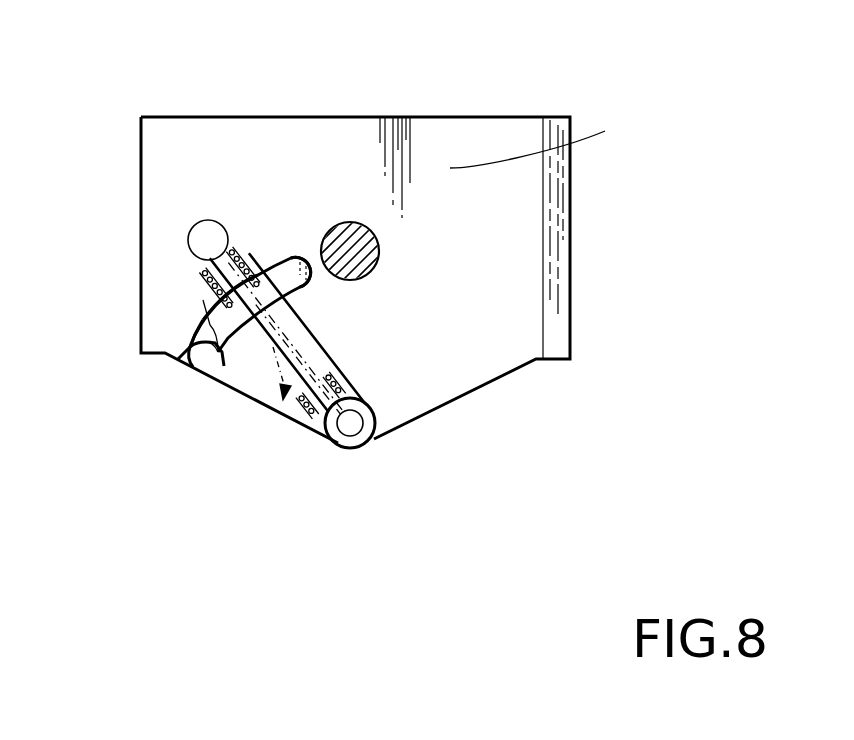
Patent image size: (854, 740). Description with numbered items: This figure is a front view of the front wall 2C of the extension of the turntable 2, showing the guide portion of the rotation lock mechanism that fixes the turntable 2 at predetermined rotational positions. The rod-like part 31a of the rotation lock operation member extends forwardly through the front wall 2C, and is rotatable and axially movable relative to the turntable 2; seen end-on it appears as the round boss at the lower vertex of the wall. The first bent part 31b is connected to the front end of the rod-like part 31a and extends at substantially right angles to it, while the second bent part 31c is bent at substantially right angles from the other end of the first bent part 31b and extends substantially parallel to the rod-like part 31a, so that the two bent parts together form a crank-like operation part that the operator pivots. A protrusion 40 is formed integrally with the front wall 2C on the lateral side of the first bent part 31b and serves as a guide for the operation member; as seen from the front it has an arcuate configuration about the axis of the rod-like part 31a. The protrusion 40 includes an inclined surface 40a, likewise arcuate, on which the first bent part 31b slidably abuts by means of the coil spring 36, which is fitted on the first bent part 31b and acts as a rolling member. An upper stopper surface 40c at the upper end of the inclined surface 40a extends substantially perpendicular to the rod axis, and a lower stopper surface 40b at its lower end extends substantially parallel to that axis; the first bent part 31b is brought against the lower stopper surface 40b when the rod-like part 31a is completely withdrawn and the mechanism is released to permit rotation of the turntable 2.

The turntable 2 is at (494, 118).
The front wall 2C is at (548, 142).
The protrusion 40 is at (265, 263).
The upper stopper surface 40c is at (286, 268).
The inclined surface 40a is at (208, 311).
The lower stopper surface 40b is at (200, 320).
The coil spring 36 is at (262, 382).
The first bent part 31b is at (322, 360).
The rod-like part 31a is at (392, 428).
The second bent part 31c is at (197, 223).